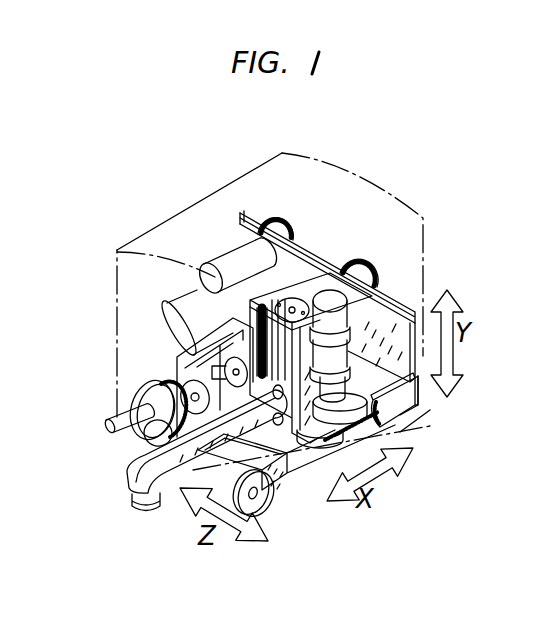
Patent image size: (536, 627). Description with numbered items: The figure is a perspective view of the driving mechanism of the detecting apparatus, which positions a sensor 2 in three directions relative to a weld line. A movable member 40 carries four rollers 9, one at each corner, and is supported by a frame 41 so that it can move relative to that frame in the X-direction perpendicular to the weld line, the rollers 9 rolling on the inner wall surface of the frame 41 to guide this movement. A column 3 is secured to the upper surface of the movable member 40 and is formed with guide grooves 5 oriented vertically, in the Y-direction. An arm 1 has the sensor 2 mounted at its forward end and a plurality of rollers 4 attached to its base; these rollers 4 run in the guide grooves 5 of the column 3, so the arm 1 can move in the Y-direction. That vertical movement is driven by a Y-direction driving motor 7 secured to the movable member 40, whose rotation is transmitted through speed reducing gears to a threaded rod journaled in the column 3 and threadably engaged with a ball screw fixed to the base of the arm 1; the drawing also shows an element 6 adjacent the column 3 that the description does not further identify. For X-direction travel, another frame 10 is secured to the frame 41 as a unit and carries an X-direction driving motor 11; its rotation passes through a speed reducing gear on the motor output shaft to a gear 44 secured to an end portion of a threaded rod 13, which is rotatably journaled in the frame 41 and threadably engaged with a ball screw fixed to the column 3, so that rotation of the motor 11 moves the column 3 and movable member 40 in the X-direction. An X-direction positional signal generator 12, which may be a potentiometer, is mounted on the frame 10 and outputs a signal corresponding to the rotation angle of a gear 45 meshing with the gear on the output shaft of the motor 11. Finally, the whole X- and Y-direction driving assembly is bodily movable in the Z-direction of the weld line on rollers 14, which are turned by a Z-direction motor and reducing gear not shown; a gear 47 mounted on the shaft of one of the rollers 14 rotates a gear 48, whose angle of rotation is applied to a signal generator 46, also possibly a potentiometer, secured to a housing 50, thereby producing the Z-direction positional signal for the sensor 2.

The arm 1 is at (133, 477).
The sensor 2 is at (143, 507).
The column 3 is at (302, 268).
The rollers 4 is at (278, 426).
The guide grooves 5 is at (240, 316).
The spindle 6 is at (348, 387).
The Y-direction driving motor 7 is at (379, 305).
The rollers 9 is at (297, 435).
The frame 10 is at (268, 213).
The X-direction driving motor 11 is at (197, 302).
The X-direction positional signal generator 12 is at (233, 253).
The threaded rod 13 is at (170, 342).
The rollers 14 is at (265, 514).
The movable member 40 is at (380, 438).
The frame 41 is at (412, 403).
The gear 44 is at (370, 272).
The gear 45 is at (280, 216).
The signal generator 46 is at (113, 411).
The gear 47 is at (160, 431).
The gear 48 is at (152, 380).
The housing 50 is at (372, 173).